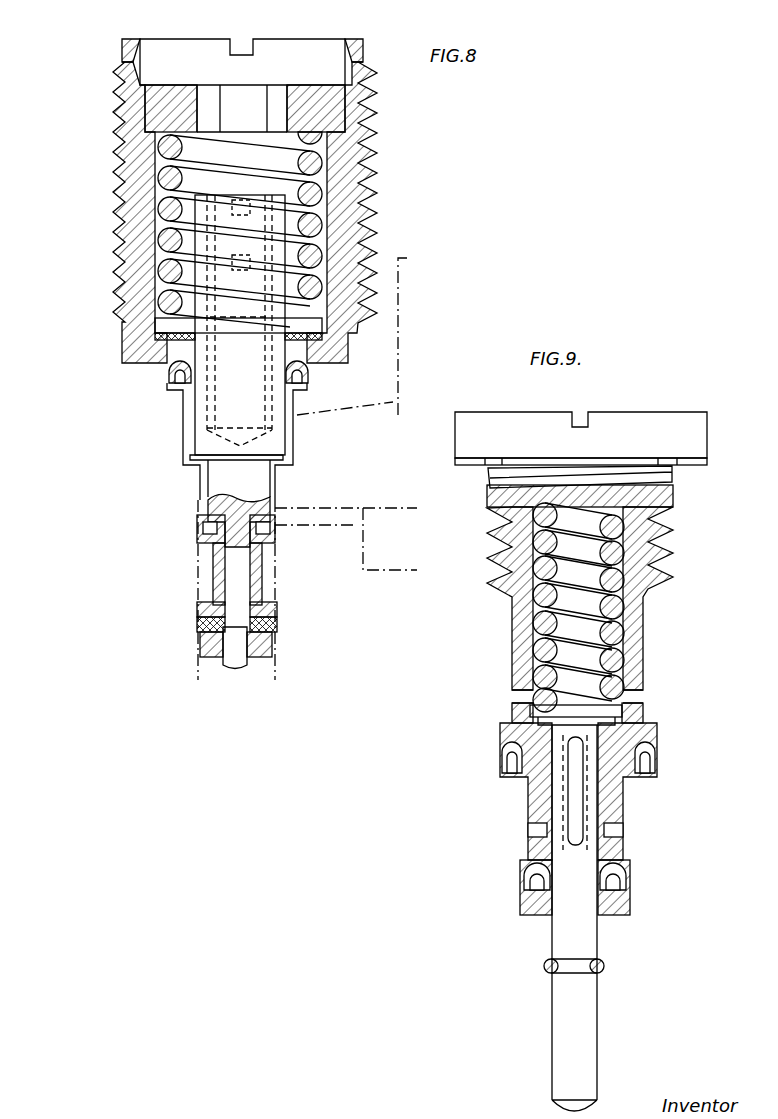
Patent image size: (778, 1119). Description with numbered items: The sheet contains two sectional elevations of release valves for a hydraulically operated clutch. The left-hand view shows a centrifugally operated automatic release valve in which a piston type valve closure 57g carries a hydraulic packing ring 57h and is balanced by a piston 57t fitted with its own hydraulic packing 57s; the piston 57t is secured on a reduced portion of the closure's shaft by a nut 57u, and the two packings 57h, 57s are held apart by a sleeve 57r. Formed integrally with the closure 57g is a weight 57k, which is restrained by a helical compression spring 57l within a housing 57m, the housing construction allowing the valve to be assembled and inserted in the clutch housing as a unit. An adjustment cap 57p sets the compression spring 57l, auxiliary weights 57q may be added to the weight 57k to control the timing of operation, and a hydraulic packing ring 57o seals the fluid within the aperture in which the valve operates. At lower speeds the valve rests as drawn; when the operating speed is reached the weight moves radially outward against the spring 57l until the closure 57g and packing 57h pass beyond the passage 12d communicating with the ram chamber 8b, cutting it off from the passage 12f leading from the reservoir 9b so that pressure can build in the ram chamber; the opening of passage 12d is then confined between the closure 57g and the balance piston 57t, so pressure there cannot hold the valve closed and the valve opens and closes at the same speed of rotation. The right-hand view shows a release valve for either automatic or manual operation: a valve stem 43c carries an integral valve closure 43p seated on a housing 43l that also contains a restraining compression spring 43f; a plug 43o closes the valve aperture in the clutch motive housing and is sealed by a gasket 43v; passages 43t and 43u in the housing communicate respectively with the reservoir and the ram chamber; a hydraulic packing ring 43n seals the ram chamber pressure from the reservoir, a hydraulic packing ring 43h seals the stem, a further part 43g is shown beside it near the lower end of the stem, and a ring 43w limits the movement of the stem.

In FIG. 8, the housing 57m is at (128, 300).
In FIG. 8, the adjustment cap 57p is at (175, 125).
In FIG. 8, the auxiliary weights 57q is at (235, 232).
In FIG. 8, the helical compression spring 57l is at (232, 283).
In FIG. 8, the hydraulic packing ring 57o is at (168, 372).
In FIG. 8, the weight 57k is at (210, 438).
In FIG. 8, the piston type valve closure 57g is at (220, 512).
In FIG. 8, the hydraulic packing ring 57h is at (205, 531).
In FIG. 8, the sleeve 57r is at (218, 564).
In FIG. 8, the hydraulic packing 57s is at (200, 612).
In FIG. 8, the balance piston 57t is at (200, 627).
In FIG. 8, the nut 57u is at (203, 640).
In FIG. 8, the reservoir 9b is at (408, 405).
In FIG. 8, the passage 12f is at (318, 418).
In FIG. 8, the passage 12d is at (318, 520).
In FIG. 8, the ram chamber 8b is at (377, 561).
In FIG. 9, the gasket 43v is at (463, 461).
In FIG. 9, the plug 43o is at (518, 498).
In FIG. 9, the housing 43l is at (518, 547).
In FIG. 9, the restraining compression spring 43f is at (518, 596).
In FIG. 9, the passage 43t is at (633, 696).
In FIG. 9, the valve closure 43p is at (540, 718).
In FIG. 9, the hydraulic packing ring 43n is at (501, 757).
In FIG. 9, the passage 43u is at (613, 830).
In FIG. 9, the bottom flange 43g is at (523, 895).
In FIG. 9, the hydraulic packing ring 43h is at (525, 868).
In FIG. 9, the valve stem 43c is at (575, 943).
In FIG. 9, the ring 43w is at (545, 964).